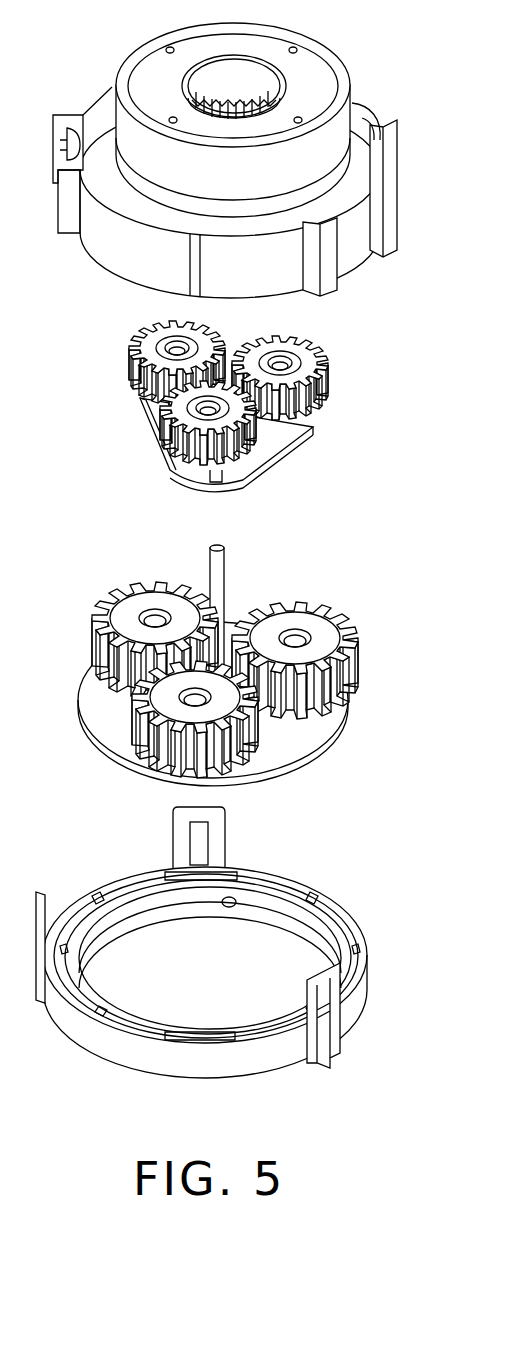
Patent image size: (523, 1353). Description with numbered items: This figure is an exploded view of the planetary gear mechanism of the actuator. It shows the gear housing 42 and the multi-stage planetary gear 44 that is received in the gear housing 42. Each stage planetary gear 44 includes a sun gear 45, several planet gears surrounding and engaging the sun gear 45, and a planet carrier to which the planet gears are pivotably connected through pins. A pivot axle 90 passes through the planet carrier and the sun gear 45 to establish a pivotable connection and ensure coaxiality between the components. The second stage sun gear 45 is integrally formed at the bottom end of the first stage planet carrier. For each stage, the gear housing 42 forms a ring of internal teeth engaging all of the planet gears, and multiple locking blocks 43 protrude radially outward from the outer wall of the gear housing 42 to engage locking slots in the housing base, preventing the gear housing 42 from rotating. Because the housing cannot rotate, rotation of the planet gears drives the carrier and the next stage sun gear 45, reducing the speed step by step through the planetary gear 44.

The gear housing 42 is at (360, 113).
The locking block 43 is at (383, 230).
The planetary gear 44 is at (344, 514).
The sun gear 45 is at (215, 477).
The pivot axle 90 is at (213, 567).